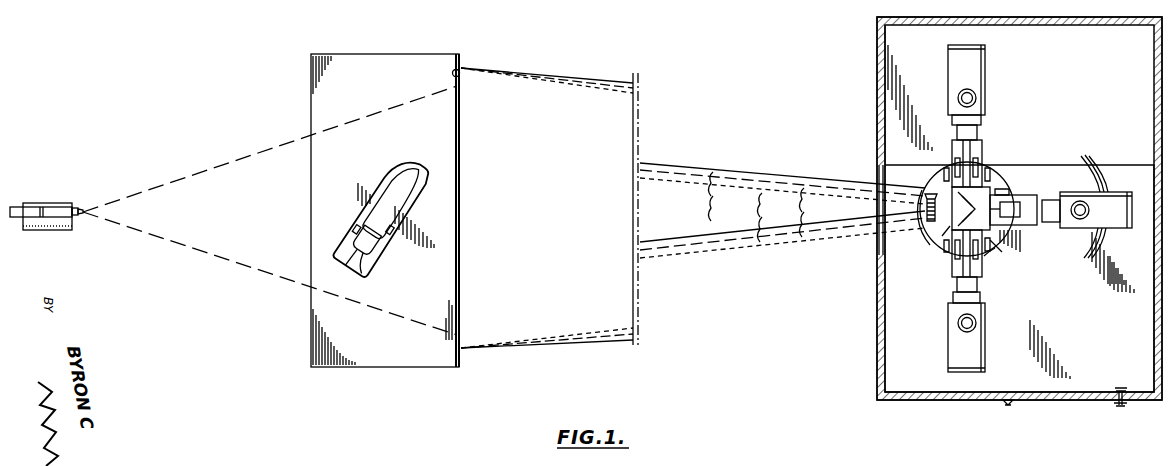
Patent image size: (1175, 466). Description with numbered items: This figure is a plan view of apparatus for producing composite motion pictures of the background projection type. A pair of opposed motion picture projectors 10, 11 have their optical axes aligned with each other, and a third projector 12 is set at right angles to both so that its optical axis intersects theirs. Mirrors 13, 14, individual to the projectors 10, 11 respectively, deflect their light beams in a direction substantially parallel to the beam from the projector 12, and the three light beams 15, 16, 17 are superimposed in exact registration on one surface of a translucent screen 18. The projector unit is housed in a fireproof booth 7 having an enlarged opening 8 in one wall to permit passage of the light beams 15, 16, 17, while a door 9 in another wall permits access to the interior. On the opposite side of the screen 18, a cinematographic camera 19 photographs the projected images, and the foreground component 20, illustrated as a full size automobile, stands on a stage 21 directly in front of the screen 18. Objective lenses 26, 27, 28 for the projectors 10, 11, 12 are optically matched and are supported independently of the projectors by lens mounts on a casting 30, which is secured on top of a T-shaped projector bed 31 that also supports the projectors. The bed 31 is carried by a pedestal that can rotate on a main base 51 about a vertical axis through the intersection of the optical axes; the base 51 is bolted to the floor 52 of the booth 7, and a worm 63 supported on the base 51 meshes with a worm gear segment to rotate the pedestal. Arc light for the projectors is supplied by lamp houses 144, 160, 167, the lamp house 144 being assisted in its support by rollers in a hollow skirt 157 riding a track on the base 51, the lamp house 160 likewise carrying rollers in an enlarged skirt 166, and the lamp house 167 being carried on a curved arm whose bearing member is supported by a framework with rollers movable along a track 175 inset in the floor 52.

The fireproof booth 7 is at (876, 113).
The enlarged opening 8 is at (876, 246).
The door 9 is at (1068, 398).
The motion picture projector 10 is at (951, 152).
The motion picture projector 11 is at (993, 252).
The third projector 12 is at (1032, 194).
The mirror 13 is at (958, 195).
The mirror 14 is at (944, 228).
The light beam 15 is at (782, 202).
The light beam 16 is at (782, 210).
The light beam 17 is at (782, 218).
The translucent screen 18 is at (461, 70).
The cinematographic camera 19 is at (58, 203).
The foreground component 20 is at (391, 160).
The stage 21 is at (398, 56).
The objective lens 26 is at (992, 184).
The objective lens 27 is at (1003, 251).
The objective lens 28 is at (1006, 232).
The casting 30 is at (1001, 190).
The T-shaped projector bed 31 is at (990, 176).
The main base 51 is at (1012, 242).
The floor 52 is at (1068, 295).
The worm 63 is at (926, 198).
The lamp house 144 is at (985, 92).
The hollow skirt 157 is at (950, 165).
The lamp house 160 is at (985, 325).
The enlarged skirt 166 is at (951, 262).
The lamp house 167 is at (1135, 188).
The track 175 is at (1091, 160).